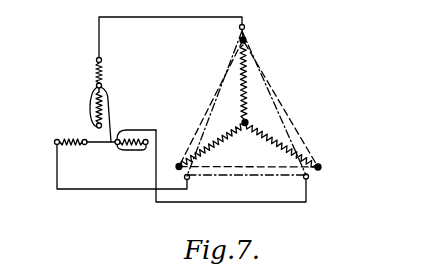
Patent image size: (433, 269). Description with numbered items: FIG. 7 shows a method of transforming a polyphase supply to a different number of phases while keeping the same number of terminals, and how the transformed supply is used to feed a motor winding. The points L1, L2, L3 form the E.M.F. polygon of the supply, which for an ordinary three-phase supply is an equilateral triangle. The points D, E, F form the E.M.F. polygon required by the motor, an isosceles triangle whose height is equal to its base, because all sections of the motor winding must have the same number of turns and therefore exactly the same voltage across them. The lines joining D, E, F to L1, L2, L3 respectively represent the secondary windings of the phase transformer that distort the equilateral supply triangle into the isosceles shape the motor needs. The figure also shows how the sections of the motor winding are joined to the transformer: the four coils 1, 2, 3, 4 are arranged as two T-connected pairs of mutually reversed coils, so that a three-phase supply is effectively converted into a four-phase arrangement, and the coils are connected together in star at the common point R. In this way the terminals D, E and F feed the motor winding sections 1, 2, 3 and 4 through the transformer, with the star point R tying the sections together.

The motor winding section 1 is at (104, 75).
The motor winding section 2 is at (73, 152).
The motor winding section 3 is at (104, 114).
The motor winding section 4 is at (135, 148).
The motor E.M.F. polygon terminal D is at (179, 40).
The motor E.M.F. polygon terminal E is at (235, 157).
The motor E.M.F. polygon terminal F is at (125, 156).
The star point R is at (101, 154).
The supply E.M.F. polygon terminal L1 is at (246, 40).
The supply E.M.F. polygon terminal L2 is at (320, 166).
The supply E.M.F. polygon terminal L3 is at (177, 164).